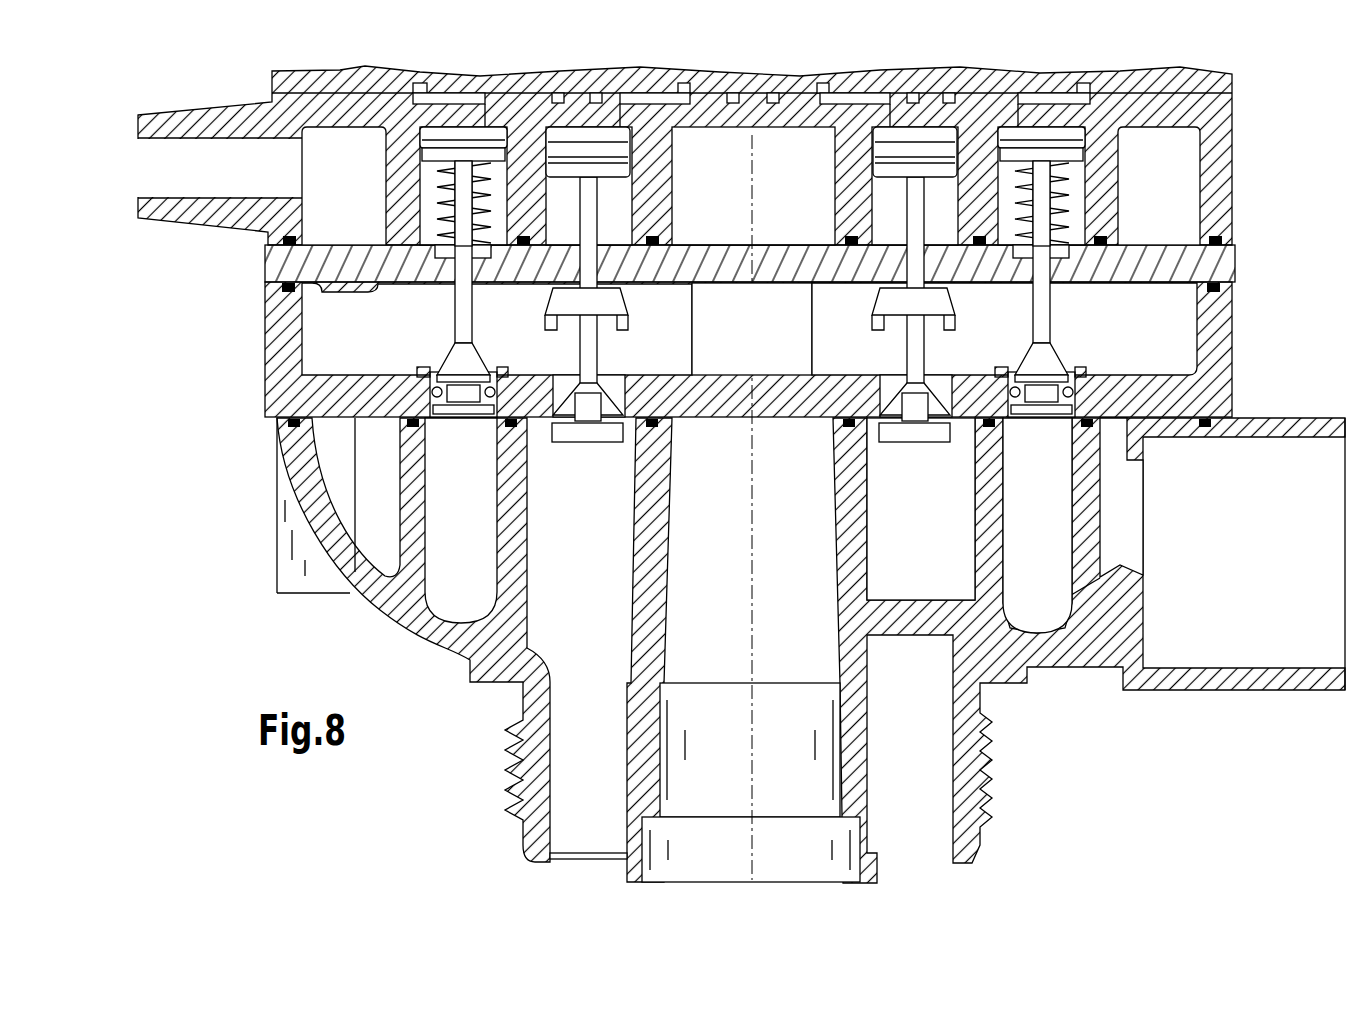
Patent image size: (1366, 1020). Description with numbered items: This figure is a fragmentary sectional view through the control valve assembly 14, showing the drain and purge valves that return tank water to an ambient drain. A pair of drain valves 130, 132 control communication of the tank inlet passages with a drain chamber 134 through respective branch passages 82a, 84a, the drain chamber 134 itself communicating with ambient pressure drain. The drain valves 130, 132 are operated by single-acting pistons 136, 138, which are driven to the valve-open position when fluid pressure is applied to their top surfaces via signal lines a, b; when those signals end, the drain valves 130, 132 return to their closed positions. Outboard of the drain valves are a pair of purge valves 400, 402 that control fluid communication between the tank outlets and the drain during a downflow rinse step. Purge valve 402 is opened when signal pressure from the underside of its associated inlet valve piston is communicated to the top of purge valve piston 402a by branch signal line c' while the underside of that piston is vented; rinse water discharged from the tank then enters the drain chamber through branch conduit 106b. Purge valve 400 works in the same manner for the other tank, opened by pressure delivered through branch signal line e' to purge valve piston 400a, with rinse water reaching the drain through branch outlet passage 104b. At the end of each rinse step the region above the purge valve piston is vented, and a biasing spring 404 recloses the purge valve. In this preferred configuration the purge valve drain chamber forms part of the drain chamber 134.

The control valve assembly 14 is at (240, 381).
The branch passage 82a is at (600, 562).
The branch passage 84a is at (940, 542).
The branch outlet passage 104b is at (487, 536).
The branch conduit 106b is at (1067, 524).
The drain valve 130 is at (628, 356).
The drain valve 132 is at (877, 356).
The drain chamber 134 is at (376, 347).
The piston 136 is at (615, 157).
The piston 138 is at (923, 153).
The purge valve 400 is at (492, 298).
The purge valve piston 400a is at (478, 140).
The purge valve 402 is at (1070, 325).
The purge valve piston 402a is at (1060, 146).
The biasing spring 404 is at (442, 205).
The signal line a is at (847, 93).
The signal line b is at (650, 93).
The branch signal line c' is at (1054, 67).
The branch signal line e' is at (449, 67).